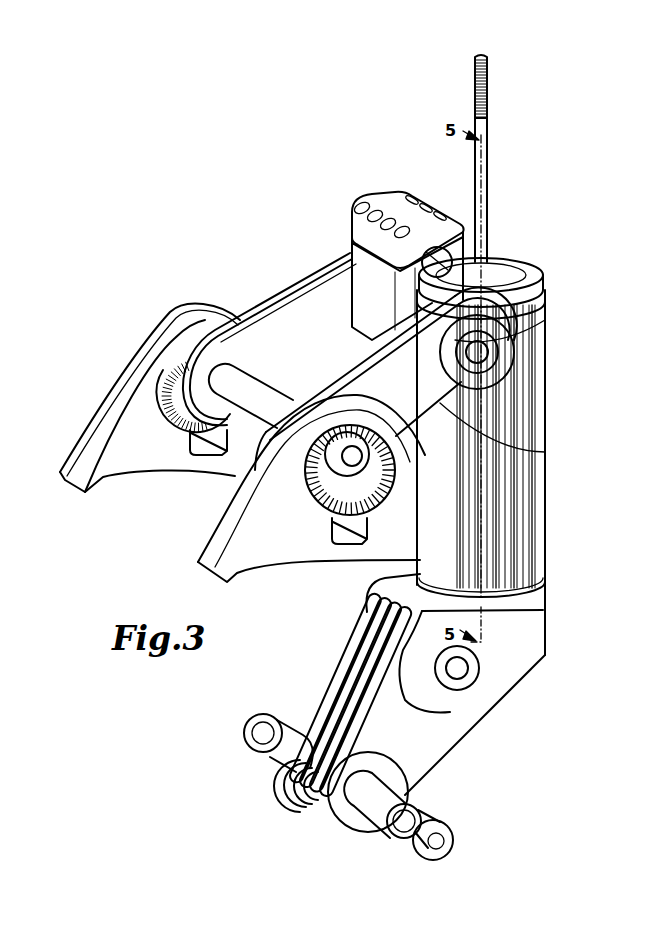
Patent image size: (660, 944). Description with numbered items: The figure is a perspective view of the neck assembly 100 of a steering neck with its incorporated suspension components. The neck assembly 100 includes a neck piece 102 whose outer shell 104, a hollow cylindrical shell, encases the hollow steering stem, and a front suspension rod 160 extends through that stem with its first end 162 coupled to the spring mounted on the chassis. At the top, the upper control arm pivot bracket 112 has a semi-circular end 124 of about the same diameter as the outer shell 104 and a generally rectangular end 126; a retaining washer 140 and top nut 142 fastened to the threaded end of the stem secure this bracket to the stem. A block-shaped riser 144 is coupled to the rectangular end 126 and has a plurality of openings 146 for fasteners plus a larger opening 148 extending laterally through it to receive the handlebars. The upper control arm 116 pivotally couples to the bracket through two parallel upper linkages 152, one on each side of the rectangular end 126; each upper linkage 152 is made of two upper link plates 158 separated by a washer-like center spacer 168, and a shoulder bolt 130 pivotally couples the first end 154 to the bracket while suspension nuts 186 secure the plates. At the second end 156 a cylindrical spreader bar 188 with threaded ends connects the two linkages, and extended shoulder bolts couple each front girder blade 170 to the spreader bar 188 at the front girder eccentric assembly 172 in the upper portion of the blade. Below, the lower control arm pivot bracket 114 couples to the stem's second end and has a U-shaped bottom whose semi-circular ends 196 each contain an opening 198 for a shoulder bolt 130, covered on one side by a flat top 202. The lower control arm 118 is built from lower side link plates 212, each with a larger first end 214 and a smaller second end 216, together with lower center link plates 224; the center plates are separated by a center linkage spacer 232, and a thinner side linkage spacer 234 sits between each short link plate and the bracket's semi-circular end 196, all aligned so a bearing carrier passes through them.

The neck assembly 100 is at (547, 580).
The neck piece 102 is at (547, 482).
The outer shell 104 is at (547, 520).
The upper control arm pivot bracket 112 is at (524, 440).
The lower control arm pivot bracket 114 is at (515, 702).
The upper control arm 116 is at (290, 300).
The lower control arm 118 is at (445, 742).
The semi-circular end 124 is at (547, 303).
The rectangular end 126 is at (352, 338).
The shoulder bolt 130 is at (480, 356).
The retaining washer 140 is at (545, 285).
The top nut 142 is at (510, 262).
The riser 144 is at (394, 241).
The openings 146 is at (366, 206).
The larger opening 148 is at (439, 252).
The upper linkage 152 is at (258, 327).
The first end 154 is at (500, 360).
The second end 156 is at (232, 478).
The upper link plate 158 is at (312, 380).
The front suspension rod 160 is at (488, 176).
The first end 162 is at (488, 95).
The center spacer 168 is at (206, 350).
The front girder blade 170 is at (72, 482).
The front girder eccentric assembly 172 is at (112, 395).
The suspension nut 186 is at (375, 458).
The spreader bar 188 is at (256, 380).
The semi-circular end 196 is at (355, 648).
The opening 198 is at (460, 688).
The flat top 202 is at (402, 576).
The lower side link plate 212 is at (337, 697).
The first end 214 is at (375, 620).
The second end 216 is at (298, 790).
The lower center link plate 224 is at (365, 674).
The center linkage spacer 232 is at (368, 592).
The side linkage spacer 234 is at (375, 641).